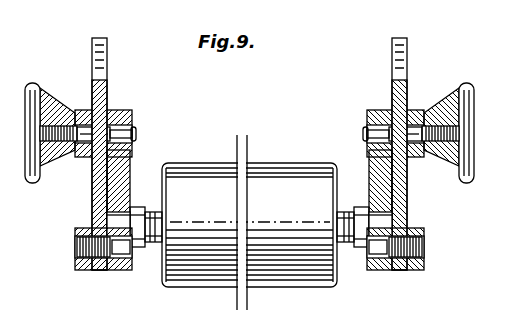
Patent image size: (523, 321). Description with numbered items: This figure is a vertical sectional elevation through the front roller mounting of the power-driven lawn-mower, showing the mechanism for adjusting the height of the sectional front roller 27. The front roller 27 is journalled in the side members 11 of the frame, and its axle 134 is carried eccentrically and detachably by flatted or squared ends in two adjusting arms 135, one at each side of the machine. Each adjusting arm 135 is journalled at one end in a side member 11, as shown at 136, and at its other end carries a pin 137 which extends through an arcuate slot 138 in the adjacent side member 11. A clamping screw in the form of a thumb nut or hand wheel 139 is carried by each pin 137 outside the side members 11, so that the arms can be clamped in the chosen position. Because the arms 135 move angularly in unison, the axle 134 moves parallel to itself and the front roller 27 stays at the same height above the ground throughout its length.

The side member 11 is at (102, 56).
The front roller 27 is at (287, 186).
The axle 134 is at (350, 246).
The adjusting arm 135 is at (98, 270).
The journal of adjusting arm 136 is at (128, 268).
The pin 137 is at (97, 128).
The arcuate slot 138 is at (397, 126).
The hand wheel 139 is at (33, 90).